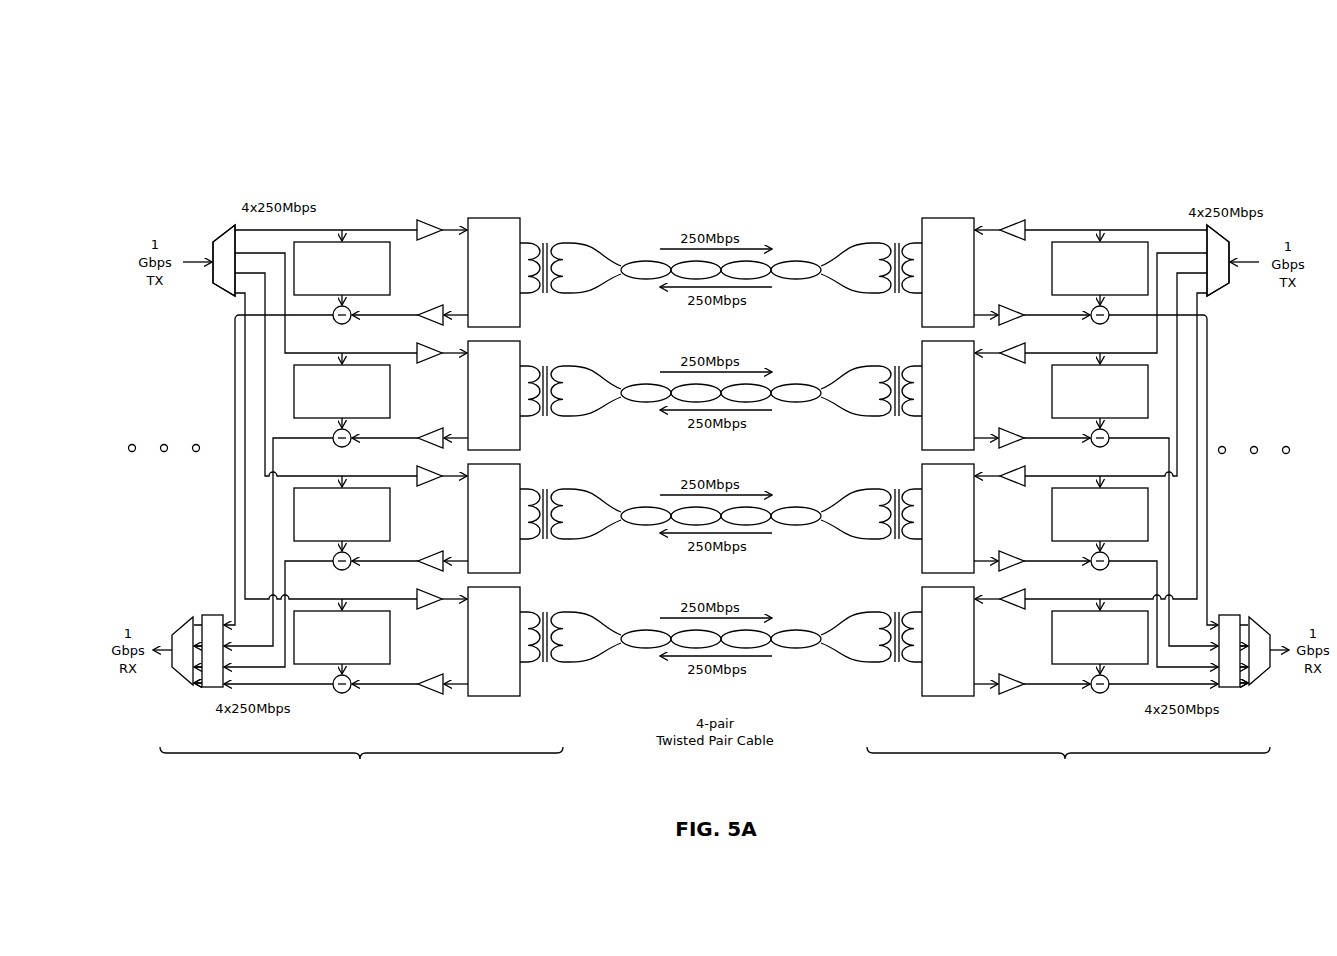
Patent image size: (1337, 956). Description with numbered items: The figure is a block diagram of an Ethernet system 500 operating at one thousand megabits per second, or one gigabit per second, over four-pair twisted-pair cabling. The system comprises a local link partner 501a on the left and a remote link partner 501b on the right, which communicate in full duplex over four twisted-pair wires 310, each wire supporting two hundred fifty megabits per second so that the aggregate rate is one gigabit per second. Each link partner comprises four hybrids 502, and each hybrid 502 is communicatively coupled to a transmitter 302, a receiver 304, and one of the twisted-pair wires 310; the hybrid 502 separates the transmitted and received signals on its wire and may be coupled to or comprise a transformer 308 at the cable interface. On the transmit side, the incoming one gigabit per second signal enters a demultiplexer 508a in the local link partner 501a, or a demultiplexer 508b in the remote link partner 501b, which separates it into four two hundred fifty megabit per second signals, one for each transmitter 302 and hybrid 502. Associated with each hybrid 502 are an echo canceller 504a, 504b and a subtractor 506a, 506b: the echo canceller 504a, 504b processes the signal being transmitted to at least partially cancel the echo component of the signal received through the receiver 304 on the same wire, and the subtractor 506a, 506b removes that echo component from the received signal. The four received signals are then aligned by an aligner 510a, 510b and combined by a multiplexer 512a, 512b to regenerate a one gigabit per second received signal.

The Ethernet system 500 is at (311, 100).
The transmitter 302 is at (420, 222).
The receiver 304 is at (440, 305).
The transformer 308 is at (884, 231).
The twisted-pair wire 310 is at (628, 251).
The hybrid 502 is at (721, 457).
The echo canceller 504a is at (367, 452).
The echo canceller 504b is at (1075, 452).
The subtractor 506a is at (361, 514).
The subtractor 506b is at (1117, 514).
The demultiplexer 508a is at (222, 292).
The demultiplexer 508b is at (1220, 292).
The aligner 510a is at (205, 614).
The aligner 510b is at (1237, 614).
The multiplexer 512a is at (180, 680).
The multiplexer 512b is at (1262, 680).
The local link partner 501a is at (508, 755).
The remote link partner 501b is at (1030, 756).